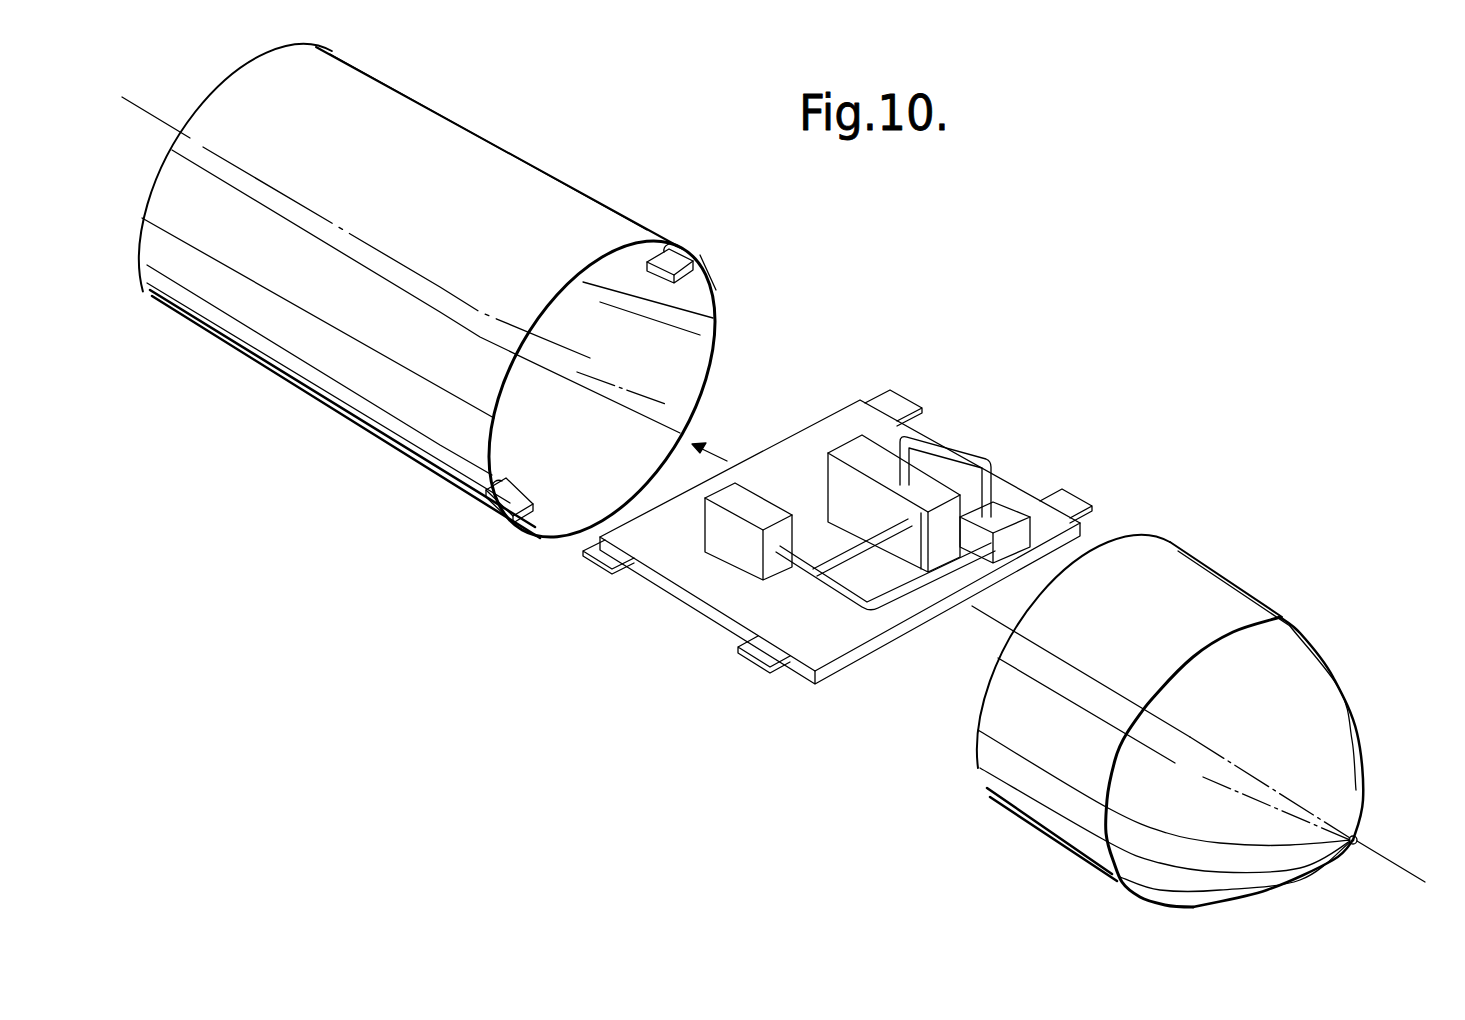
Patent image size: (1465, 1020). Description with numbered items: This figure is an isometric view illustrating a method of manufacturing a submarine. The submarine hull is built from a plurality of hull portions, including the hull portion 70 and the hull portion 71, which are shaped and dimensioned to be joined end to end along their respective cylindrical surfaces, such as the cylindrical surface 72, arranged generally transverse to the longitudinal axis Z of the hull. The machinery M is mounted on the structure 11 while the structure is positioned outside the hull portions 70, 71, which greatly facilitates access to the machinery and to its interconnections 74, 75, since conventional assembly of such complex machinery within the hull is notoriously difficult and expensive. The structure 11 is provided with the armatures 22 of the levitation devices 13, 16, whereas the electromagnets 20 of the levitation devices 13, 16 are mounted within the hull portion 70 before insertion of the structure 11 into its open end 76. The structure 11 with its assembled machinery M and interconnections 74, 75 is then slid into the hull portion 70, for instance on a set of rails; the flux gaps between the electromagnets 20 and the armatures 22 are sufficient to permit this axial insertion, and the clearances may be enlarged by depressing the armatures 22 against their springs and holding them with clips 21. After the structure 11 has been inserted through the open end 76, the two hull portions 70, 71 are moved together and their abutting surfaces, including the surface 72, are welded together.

The hull portion 70 is at (427, 192).
The hull portion 71 is at (1133, 642).
The structure 11 is at (830, 427).
The armatures 22 is at (603, 570).
The clips 21 is at (676, 248).
The electromagnets 20 is at (657, 272).
The levitation device 16 is at (703, 250).
The cylindrical surface 72 is at (712, 285).
The open end 76 is at (652, 347).
The levitation device 13 is at (508, 526).
The interconnection 75 is at (987, 461).
The interconnection 74 is at (847, 594).
The machinery M is at (853, 486).
The longitudinal axis Z is at (783, 490).